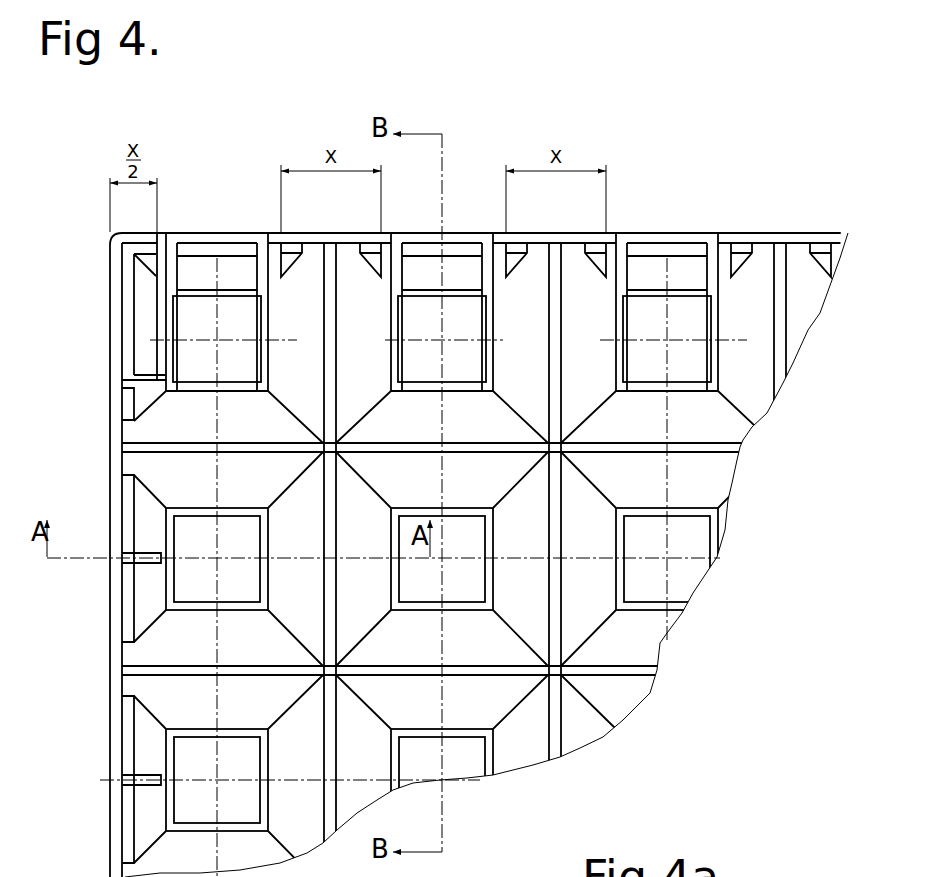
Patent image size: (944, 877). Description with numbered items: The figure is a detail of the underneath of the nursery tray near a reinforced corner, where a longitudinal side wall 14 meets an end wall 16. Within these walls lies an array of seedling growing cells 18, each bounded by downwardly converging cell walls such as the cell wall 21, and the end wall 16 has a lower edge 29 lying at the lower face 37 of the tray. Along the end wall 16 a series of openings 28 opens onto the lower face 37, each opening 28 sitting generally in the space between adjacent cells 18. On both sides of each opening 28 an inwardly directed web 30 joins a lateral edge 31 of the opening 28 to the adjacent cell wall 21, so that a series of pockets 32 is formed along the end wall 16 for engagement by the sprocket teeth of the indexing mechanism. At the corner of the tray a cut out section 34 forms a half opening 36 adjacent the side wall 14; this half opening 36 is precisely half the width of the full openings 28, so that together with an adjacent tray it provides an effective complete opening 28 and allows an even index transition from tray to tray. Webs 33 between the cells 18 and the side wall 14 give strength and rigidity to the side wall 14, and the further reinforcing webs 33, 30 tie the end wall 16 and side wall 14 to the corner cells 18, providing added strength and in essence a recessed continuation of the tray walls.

In FIG. 4, the longitudinal side wall 14 is at (122, 578).
In FIG. 4, the end wall 16 is at (235, 231).
In FIG. 4, the seedling growing cell 18 is at (160, 428).
In FIG. 4a, the seedling growing cell 18 is at (782, 868).
In FIG. 4, the cell wall 21 is at (185, 287).
In FIG. 4, the opening 28 is at (292, 238).
In FIG. 4, the lower edge of the end wall 29 is at (110, 608).
In FIG. 4, the inwardly directed web 30 is at (172, 240).
In FIG. 4, the lateral edge of the opening 31 is at (322, 232).
In FIG. 4, the pocket 32 is at (350, 263).
In FIG. 4, the web 33 is at (140, 382).
In FIG. 4, the cut out section 34 is at (118, 321).
In FIG. 4, the half opening 36 is at (132, 236).
In FIG. 4, the lower face 37 is at (197, 237).